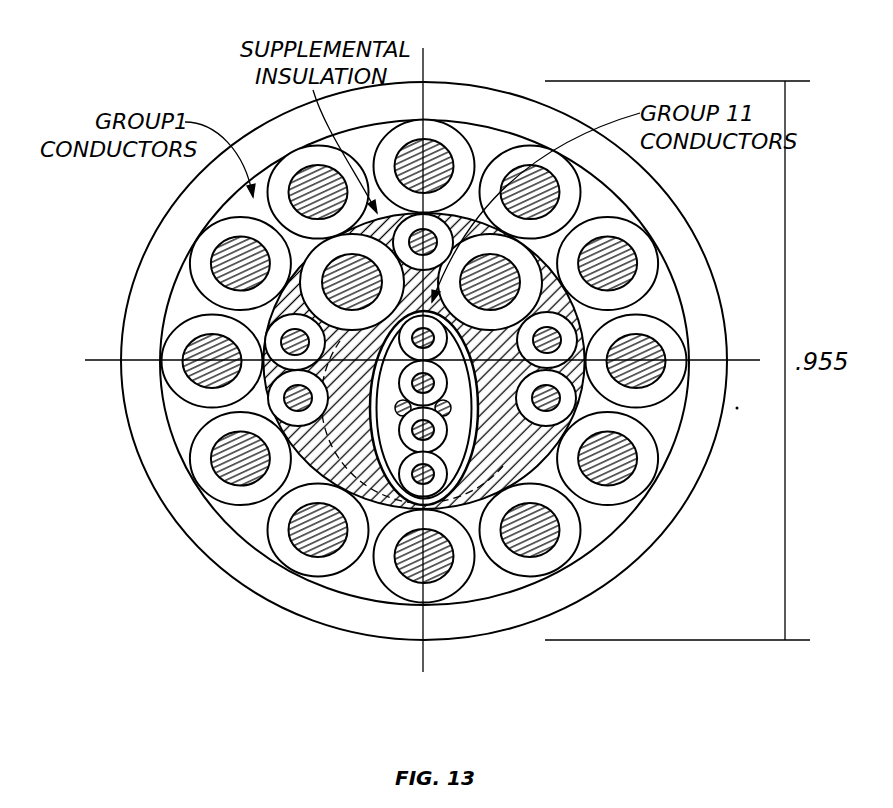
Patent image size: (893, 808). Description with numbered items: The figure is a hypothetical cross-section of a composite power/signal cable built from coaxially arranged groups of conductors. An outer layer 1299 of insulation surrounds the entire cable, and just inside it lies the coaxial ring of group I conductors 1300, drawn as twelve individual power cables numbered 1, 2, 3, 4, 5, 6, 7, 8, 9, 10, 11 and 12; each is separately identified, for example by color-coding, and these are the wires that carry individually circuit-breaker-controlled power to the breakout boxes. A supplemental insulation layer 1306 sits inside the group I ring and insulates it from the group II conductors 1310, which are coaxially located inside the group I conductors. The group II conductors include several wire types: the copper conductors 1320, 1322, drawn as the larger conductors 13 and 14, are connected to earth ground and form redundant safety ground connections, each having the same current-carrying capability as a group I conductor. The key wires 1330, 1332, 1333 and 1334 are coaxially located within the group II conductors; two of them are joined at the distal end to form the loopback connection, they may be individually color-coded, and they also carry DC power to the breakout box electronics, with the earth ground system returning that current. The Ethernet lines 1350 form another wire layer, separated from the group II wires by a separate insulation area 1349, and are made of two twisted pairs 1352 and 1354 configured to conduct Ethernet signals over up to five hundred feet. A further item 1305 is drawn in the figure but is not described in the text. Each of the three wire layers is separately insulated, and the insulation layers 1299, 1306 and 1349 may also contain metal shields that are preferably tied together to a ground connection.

The outer layer of insulation 1299 is at (257, 140).
The group I conductors 1300 is at (185, 310).
The conductor insulation 1305 is at (185, 375).
The supplemental insulation layer 1306 is at (345, 585).
The group II conductors 1310 is at (482, 400).
The copper conductor 1320 is at (540, 285).
The copper conductor 1322 is at (325, 300).
The key wire 1330 is at (215, 445).
The key wire 1332 is at (434, 215).
The key wire 1333 is at (575, 330).
The key wire 1334 is at (505, 389).
The insulation area 1349 is at (280, 475).
The Ethernet lines 1350 is at (272, 540).
The twisted pair 1352 is at (540, 598).
The twisted pair 1354 is at (540, 420).
The conductor 1 is at (530, 192).
The conductor 2 is at (607, 263).
The conductor 3 is at (636, 361).
The conductor 4 is at (607, 458).
The conductor 5 is at (530, 529).
The conductor 6 is at (424, 556).
The conductor 7 is at (318, 529).
The conductor 8 is at (240, 458).
The conductor 9 is at (212, 361).
The conductor 10 is at (240, 263).
The conductor 11 is at (318, 192).
The conductor 12 is at (424, 166).
The conductor 13 is at (352, 282).
The conductor 14 is at (490, 282).